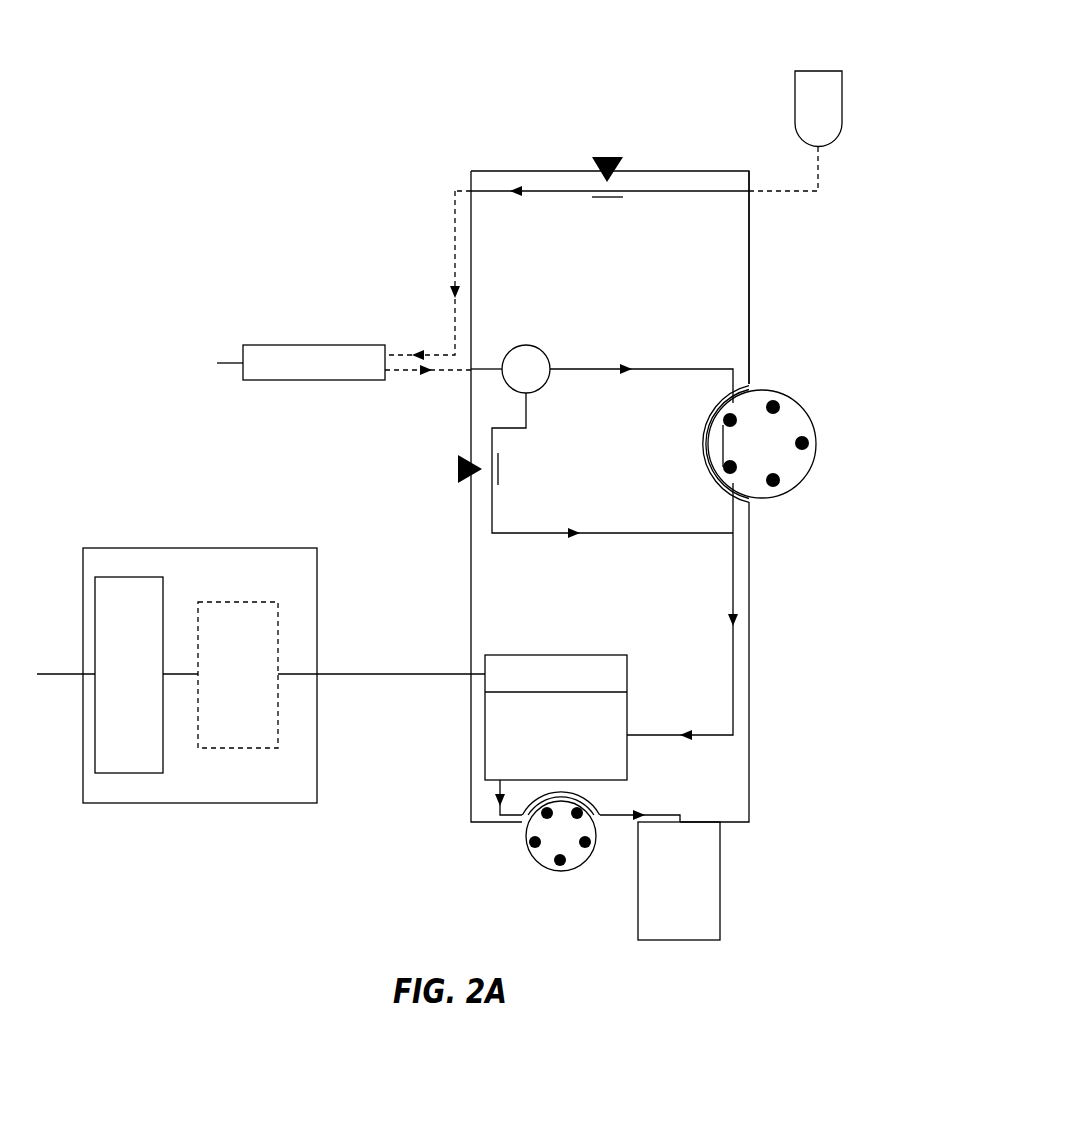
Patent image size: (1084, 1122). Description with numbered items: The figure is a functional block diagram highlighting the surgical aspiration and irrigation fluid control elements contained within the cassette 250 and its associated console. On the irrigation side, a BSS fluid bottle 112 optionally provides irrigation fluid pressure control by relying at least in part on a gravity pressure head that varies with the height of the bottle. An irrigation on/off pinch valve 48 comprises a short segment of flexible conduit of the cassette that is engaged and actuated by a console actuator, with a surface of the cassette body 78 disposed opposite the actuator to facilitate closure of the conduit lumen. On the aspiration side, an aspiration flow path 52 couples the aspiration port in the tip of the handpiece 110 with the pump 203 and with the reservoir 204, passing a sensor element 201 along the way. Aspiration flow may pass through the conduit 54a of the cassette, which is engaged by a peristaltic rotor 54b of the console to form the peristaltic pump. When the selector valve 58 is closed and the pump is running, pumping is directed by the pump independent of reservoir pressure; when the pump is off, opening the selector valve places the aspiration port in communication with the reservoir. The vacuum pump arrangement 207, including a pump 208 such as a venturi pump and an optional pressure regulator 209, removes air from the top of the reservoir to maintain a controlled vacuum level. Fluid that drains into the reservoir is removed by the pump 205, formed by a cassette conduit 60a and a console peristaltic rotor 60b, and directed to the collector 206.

The BSS fluid bottle 112 is at (822, 70).
The cassette 250 is at (440, 153).
The irrigation on/off pinch valve 48 is at (607, 202).
The cassette body 78 is at (723, 277).
The handpiece 110 is at (358, 343).
The aspiration flow path 52 is at (485, 368).
The pressure sensor 201 is at (537, 343).
The conduit 54a is at (650, 365).
The pump 203 is at (778, 375).
The selector valve 58 is at (507, 469).
The peristaltic rotor 54b is at (723, 467).
The vacuum pump arrangement 207 is at (178, 547).
The pump 208 is at (118, 576).
The pressure regulator 209 is at (247, 602).
The reservoir 204 is at (643, 698).
The conduit 60a is at (498, 808).
The peristaltic rotor 60b is at (545, 820).
The pump 205 is at (573, 870).
The collector 206 is at (718, 900).